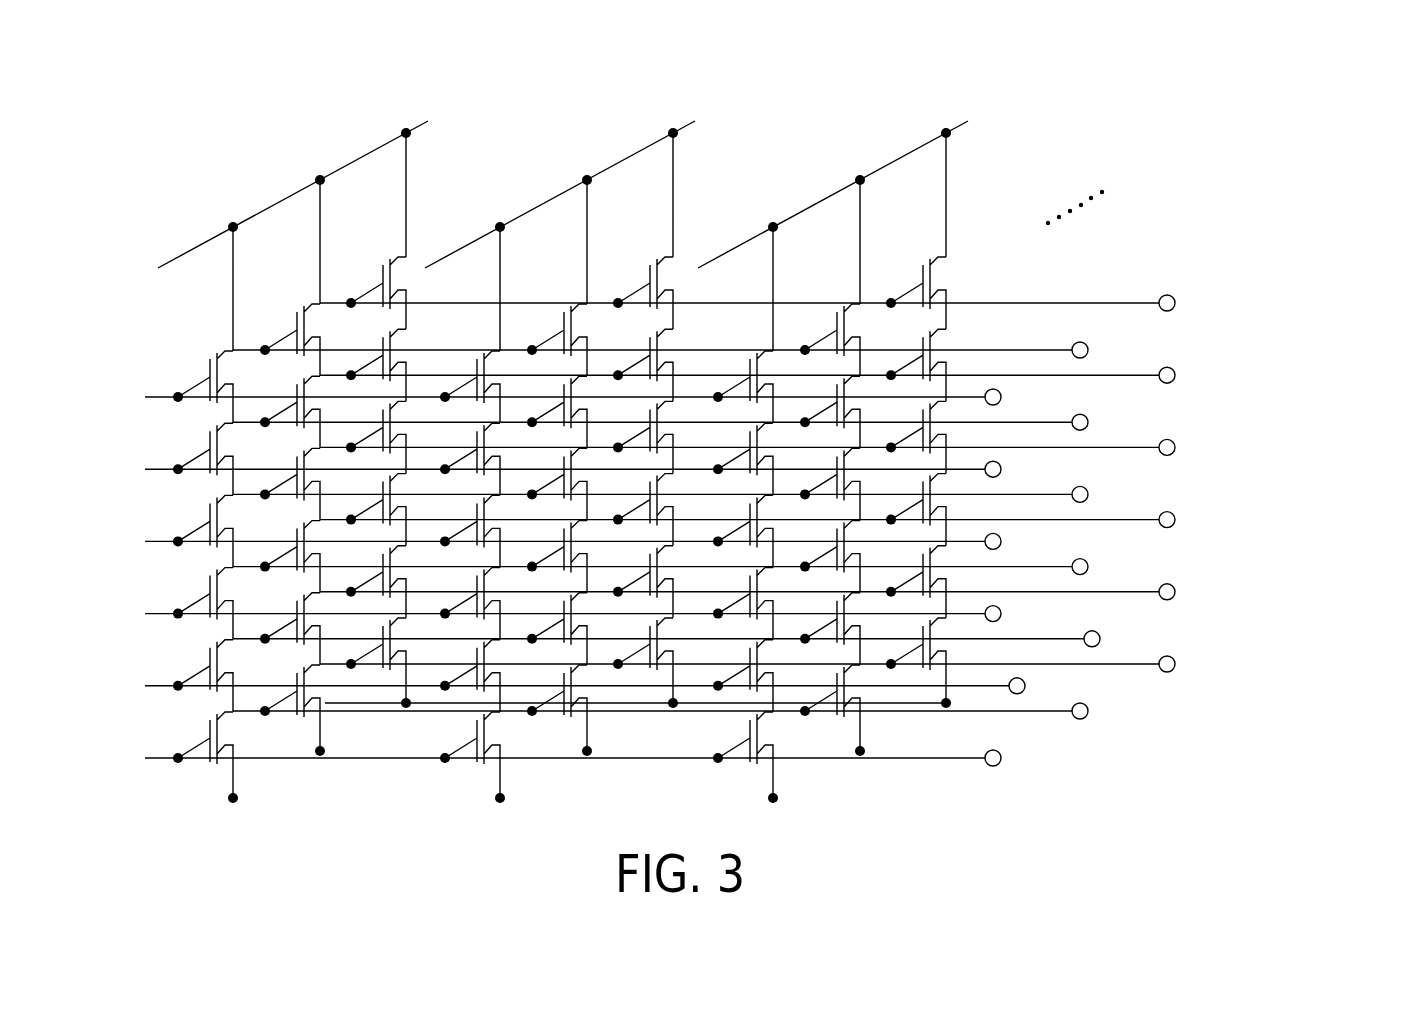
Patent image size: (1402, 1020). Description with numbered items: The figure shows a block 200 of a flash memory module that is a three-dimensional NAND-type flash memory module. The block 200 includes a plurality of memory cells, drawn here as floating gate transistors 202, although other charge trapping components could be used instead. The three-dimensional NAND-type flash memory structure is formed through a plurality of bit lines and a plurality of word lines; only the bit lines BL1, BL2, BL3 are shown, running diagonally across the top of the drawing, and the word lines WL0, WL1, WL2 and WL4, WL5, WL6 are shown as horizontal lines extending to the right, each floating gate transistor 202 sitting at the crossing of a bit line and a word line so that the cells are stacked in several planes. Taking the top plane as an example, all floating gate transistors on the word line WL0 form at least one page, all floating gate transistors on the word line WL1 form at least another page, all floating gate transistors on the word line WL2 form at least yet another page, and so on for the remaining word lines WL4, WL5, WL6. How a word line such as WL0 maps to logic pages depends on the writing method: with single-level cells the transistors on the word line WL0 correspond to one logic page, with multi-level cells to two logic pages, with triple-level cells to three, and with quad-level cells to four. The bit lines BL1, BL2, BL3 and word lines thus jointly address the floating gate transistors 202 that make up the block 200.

The block 200 is at (1224, 112).
The floating gate transistor 202 is at (207, 373).
The bit line BL1 is at (430, 121).
The bit line BL2 is at (697, 121).
The bit line BL3 is at (970, 121).
The word line WL0 is at (1001, 397).
The word line WL1 is at (1088, 350).
The word line WL2 is at (1175, 303).
The word line WL4 is at (1001, 469).
The word line WL5 is at (1088, 422).
The word line WL6 is at (1175, 375).